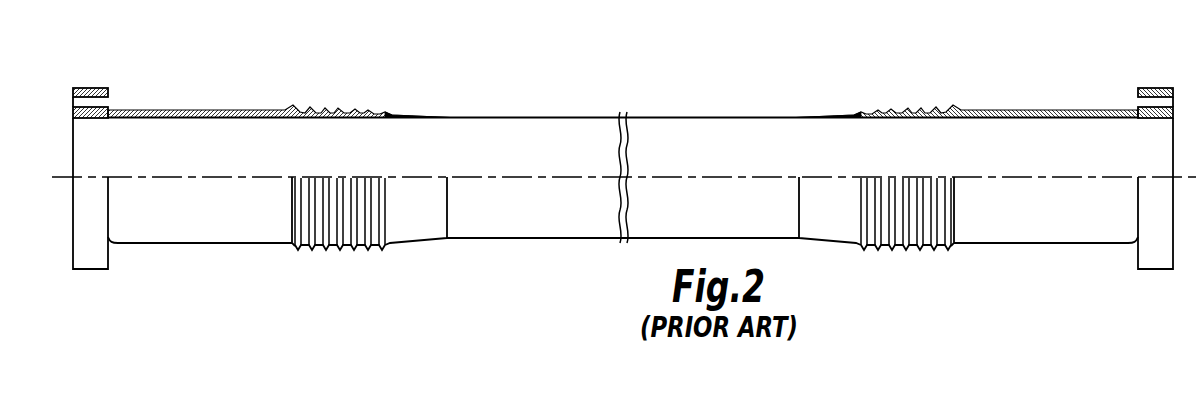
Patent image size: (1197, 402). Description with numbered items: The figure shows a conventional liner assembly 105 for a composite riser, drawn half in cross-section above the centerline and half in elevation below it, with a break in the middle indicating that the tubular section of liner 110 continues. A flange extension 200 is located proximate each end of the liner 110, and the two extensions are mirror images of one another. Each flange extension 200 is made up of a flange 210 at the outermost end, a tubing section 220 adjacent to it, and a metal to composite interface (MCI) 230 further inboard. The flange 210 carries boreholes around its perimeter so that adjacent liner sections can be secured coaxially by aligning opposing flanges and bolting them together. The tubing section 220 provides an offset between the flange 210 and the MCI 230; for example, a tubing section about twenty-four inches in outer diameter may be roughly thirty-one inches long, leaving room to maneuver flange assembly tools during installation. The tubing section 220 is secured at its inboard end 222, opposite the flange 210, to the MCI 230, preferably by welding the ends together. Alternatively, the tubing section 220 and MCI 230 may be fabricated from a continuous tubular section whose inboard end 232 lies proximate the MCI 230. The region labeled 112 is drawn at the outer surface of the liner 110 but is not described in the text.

The liner assembly 105 is at (697, 68).
The liner 110 is at (645, 236).
The outer surface of tool joint 112 is at (418, 113).
The flange extension 200 is at (325, 112).
The flange 210 is at (93, 269).
The tubing section 220 is at (263, 243).
The inboard end 222 is at (288, 250).
The metal to composite interface (MCI) 230 is at (333, 251).
The inboard end 232 is at (393, 248).